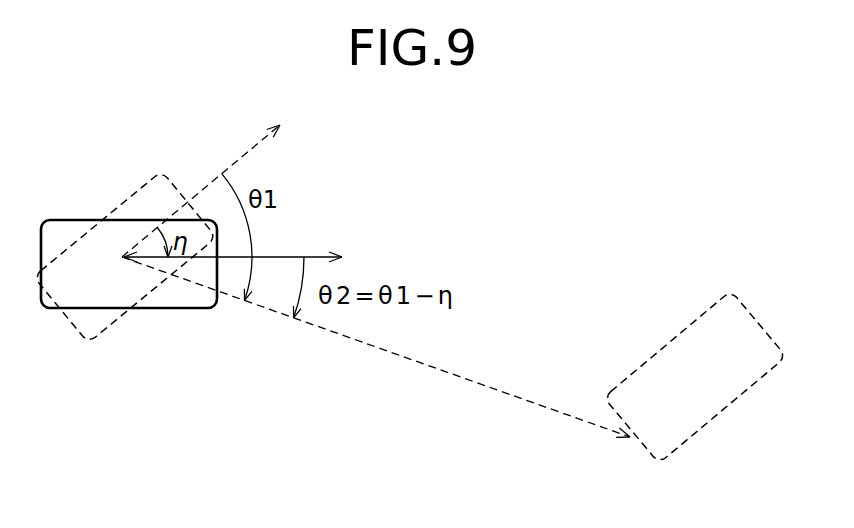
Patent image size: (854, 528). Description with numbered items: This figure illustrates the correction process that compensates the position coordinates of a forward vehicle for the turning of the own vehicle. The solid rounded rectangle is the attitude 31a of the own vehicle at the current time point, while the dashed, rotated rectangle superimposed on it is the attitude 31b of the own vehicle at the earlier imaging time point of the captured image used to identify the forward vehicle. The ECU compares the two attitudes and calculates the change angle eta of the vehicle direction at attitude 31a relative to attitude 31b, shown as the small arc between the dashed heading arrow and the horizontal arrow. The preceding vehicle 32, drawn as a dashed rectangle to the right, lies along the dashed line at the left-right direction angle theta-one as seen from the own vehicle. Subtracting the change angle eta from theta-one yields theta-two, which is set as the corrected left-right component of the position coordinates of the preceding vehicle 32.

The attitude of the own vehicle at current time point 31a is at (163, 308).
The attitude of the own vehicle at imaging time point 31b is at (127, 197).
The preceding vehicle 32 is at (687, 328).